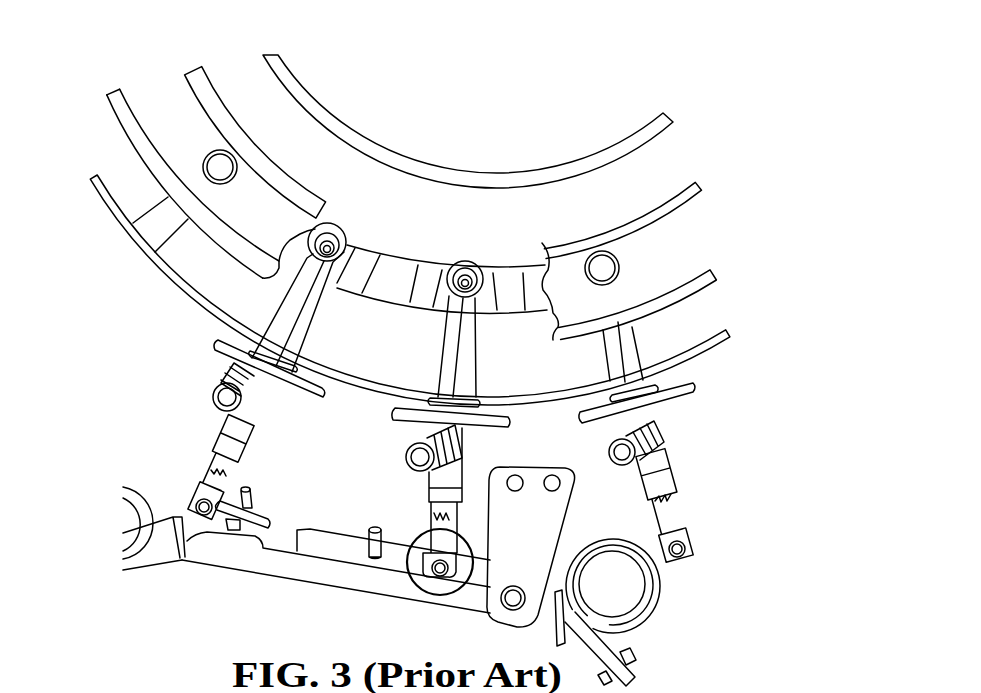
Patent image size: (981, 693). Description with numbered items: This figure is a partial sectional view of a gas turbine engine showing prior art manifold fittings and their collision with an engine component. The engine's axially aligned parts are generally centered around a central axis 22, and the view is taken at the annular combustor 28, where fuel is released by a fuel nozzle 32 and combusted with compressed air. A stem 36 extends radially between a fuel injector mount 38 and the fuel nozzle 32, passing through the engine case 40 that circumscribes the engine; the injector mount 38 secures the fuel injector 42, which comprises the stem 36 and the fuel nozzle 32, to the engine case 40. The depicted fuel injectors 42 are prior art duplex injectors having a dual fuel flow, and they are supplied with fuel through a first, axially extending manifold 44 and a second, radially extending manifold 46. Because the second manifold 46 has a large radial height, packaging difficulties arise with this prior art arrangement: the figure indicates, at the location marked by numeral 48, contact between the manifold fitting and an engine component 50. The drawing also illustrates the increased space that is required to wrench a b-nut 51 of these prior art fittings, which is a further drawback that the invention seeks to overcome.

The central axis 22 is at (495, 60).
The combustor 28 is at (181, 69).
The fuel nozzle 32 is at (338, 228).
The stem 36 is at (308, 303).
The fuel injector mount 38 is at (300, 397).
The engine case 40 is at (703, 352).
The fuel injector 42 is at (206, 320).
The first manifold 44 is at (406, 446).
The second manifold 46 is at (441, 545).
The contact 48 is at (420, 528).
The engine component 50 is at (307, 571).
The b-nut 51 is at (689, 476).